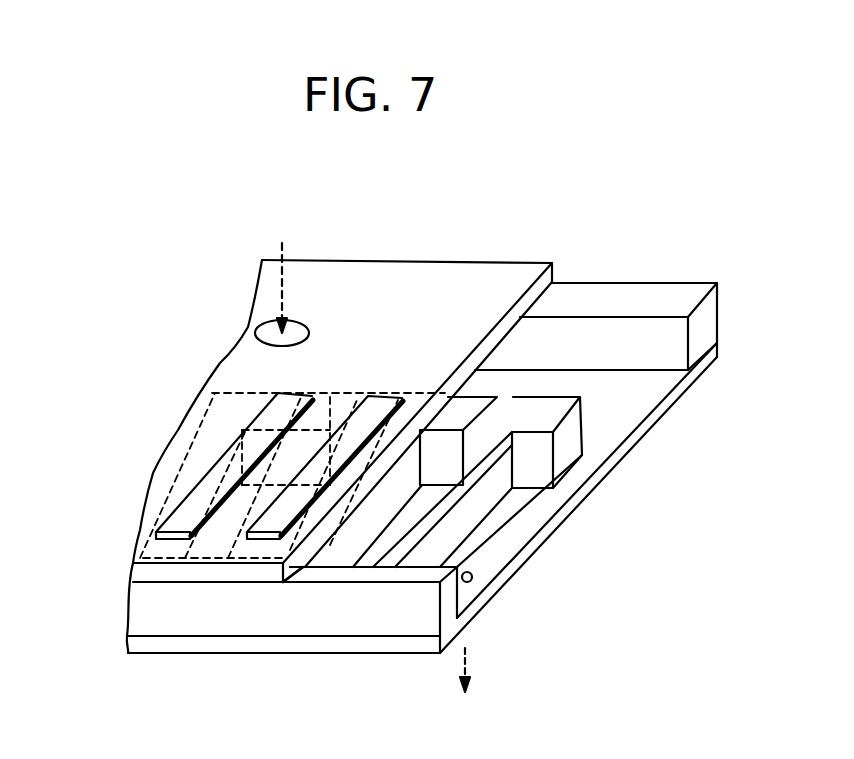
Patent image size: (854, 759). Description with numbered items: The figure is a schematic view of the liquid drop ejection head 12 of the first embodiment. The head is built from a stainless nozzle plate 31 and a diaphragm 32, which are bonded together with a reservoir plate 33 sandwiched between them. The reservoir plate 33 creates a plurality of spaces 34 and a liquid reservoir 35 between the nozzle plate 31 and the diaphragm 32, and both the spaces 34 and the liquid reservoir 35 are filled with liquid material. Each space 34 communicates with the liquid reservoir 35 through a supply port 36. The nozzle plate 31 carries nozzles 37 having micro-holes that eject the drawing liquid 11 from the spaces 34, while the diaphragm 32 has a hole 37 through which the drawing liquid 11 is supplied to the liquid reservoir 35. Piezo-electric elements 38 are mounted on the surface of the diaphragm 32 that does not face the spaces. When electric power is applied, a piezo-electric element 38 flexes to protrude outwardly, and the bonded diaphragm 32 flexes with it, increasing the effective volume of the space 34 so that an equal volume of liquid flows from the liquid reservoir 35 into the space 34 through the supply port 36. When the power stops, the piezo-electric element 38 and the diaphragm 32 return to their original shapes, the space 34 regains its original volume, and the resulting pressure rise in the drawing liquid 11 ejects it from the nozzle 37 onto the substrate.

The drawing liquid 11 is at (278, 280).
The liquid drop ejection head 12 is at (503, 238).
The nozzle plate 31 is at (640, 438).
The diaphragm 32 is at (290, 566).
The reservoir plate 33 is at (478, 508).
The space 34 is at (402, 473).
The liquid reservoir 35 is at (627, 383).
The supply port 36 is at (478, 418).
The nozzle 37 is at (270, 331).
The piezo-electric element 38 is at (200, 505).